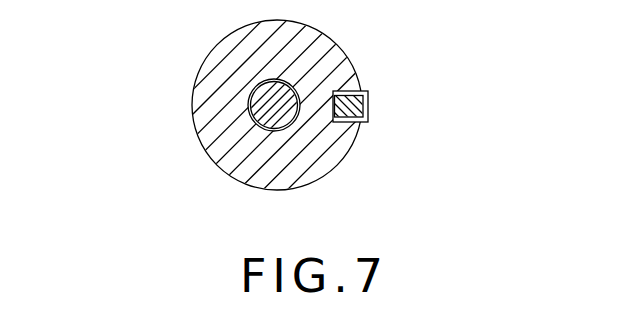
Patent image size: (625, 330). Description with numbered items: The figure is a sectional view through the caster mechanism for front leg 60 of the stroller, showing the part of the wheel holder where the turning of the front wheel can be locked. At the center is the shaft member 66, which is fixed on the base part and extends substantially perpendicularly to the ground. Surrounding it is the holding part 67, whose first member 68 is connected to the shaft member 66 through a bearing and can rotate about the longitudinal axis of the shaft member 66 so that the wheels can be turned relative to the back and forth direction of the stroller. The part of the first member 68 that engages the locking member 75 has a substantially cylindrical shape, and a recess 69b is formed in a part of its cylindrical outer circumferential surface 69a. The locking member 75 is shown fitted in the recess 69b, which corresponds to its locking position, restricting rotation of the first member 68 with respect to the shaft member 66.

The caster mechanism for front leg 60 is at (168, 110).
The shaft member 66 is at (251, 90).
The holding part 67 is at (280, 118).
The first member 68 is at (280, 118).
The cylindrical outer circumferential surface 69a is at (220, 172).
The recess 69b is at (360, 92).
The locking member 75 is at (365, 108).